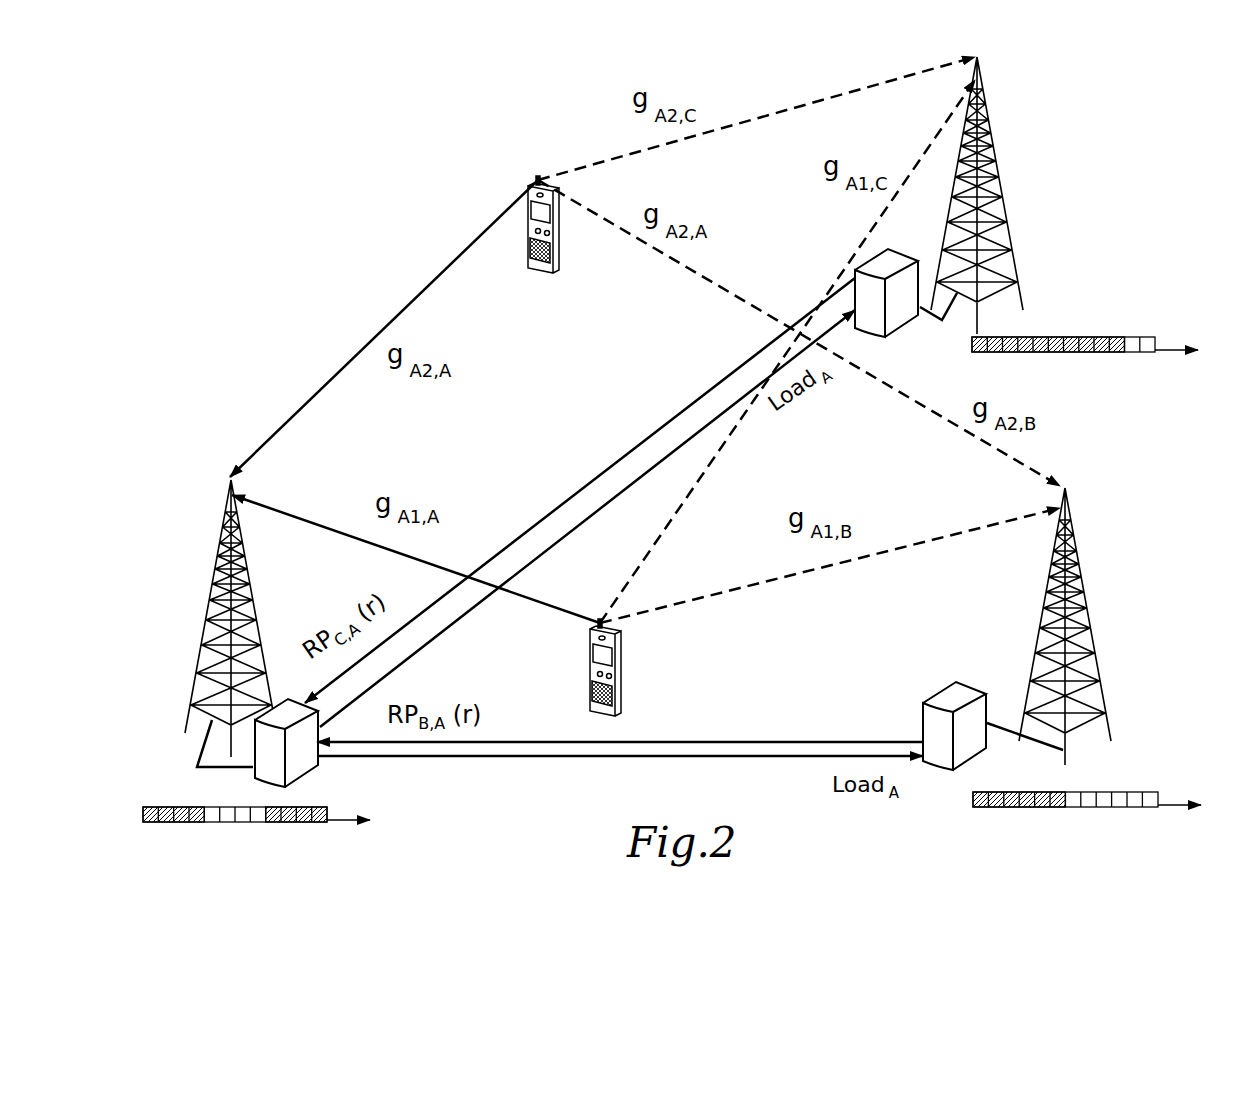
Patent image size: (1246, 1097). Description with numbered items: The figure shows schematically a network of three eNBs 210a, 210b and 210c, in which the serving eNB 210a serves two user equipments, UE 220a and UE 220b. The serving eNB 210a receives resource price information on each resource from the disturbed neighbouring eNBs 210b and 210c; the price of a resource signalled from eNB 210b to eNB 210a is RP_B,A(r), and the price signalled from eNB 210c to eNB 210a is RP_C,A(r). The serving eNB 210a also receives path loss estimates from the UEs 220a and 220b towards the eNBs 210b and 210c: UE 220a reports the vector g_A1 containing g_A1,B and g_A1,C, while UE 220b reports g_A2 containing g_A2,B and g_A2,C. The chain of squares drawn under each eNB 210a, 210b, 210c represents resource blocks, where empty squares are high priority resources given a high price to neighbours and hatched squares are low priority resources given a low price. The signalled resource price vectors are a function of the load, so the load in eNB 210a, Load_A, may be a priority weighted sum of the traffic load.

The eNB 210a is at (178, 620).
The eNB 210b is at (1120, 607).
The eNB 210c is at (1030, 173).
The UE 220a is at (622, 674).
The UE 220b is at (538, 220).